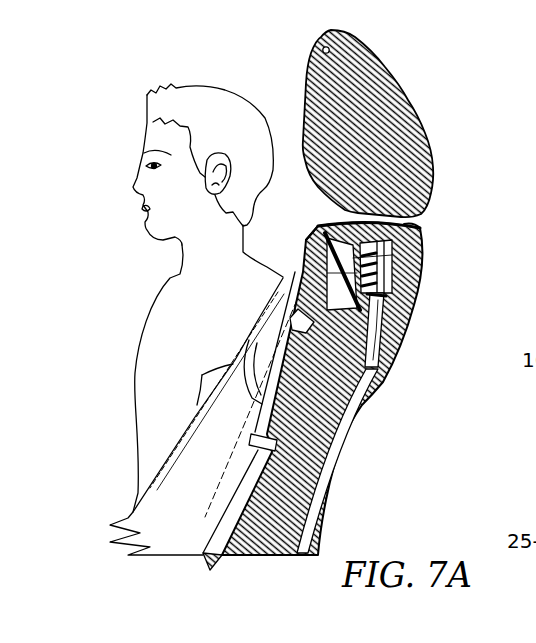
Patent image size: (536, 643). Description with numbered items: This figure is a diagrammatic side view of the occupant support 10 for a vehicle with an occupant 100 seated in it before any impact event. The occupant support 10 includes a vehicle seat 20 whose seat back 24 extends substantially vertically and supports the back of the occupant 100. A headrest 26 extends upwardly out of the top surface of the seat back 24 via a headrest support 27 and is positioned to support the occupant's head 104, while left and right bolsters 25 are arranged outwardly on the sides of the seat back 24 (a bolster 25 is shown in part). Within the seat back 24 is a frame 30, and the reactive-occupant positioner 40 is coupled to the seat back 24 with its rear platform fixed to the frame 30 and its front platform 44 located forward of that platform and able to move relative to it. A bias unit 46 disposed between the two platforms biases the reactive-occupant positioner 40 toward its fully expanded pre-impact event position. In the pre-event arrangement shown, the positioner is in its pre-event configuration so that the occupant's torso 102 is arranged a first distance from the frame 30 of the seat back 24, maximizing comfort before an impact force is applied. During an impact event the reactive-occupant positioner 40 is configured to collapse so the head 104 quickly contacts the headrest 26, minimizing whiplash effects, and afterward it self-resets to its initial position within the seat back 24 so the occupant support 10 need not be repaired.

The occupant support 10 is at (295, 294).
The vehicle seat 20 is at (303, 300).
The seat back 24 is at (426, 305).
The bolster 25 is at (156, 537).
The headrest 26 is at (386, 100).
The headrest support 27 is at (378, 360).
The frame 30 is at (327, 450).
The reactive-occupant positioner 40 is at (416, 226).
The front platform 44 is at (318, 222).
The bias unit 46 is at (411, 262).
The occupant 100 is at (170, 296).
The torso 102 is at (153, 418).
The head 104 is at (160, 105).